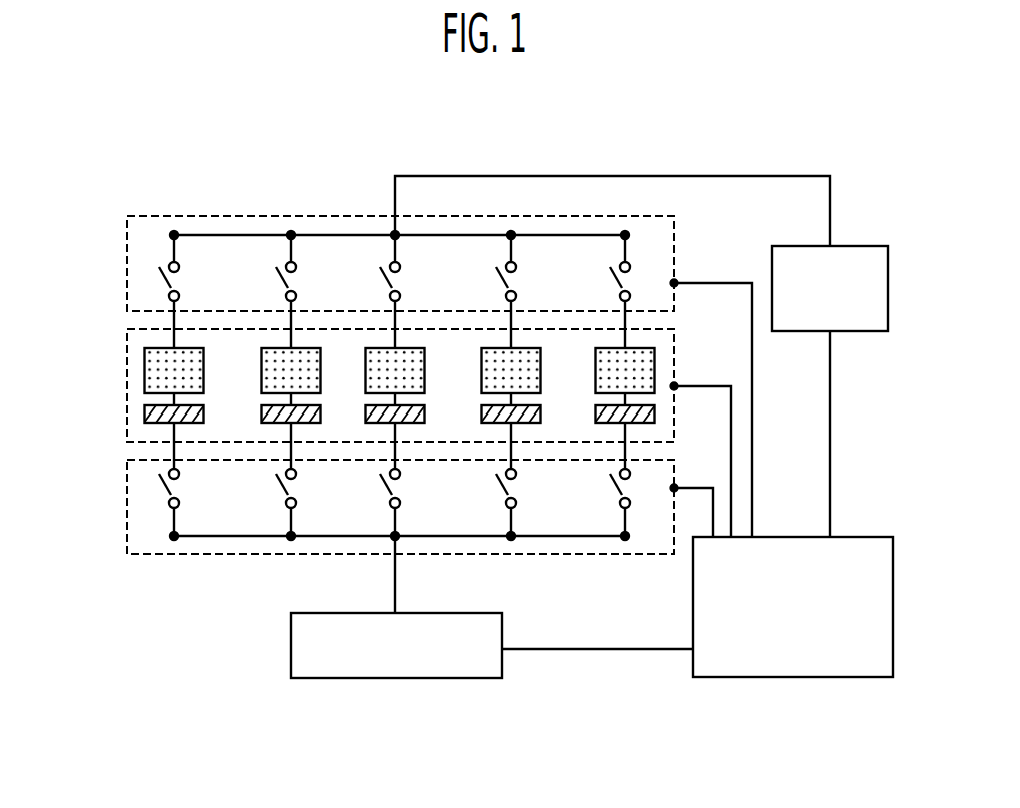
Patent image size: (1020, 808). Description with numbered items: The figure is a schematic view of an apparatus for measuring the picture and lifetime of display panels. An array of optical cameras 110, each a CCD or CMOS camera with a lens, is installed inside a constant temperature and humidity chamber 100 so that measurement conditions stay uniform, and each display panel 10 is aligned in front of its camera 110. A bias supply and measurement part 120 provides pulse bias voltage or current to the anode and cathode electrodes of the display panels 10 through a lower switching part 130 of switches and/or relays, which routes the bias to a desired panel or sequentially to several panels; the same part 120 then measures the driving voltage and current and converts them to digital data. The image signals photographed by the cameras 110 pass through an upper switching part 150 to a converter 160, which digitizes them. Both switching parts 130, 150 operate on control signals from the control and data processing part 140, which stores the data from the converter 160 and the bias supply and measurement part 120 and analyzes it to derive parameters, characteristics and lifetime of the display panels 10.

The display panel 10 is at (144, 410).
The constant temperature and humidity chamber 100 is at (127, 342).
The optical camera 110 is at (144, 375).
The bias supply and measurement part 120 is at (291, 640).
The switching part 130 is at (127, 505).
The control and data processing part 140 is at (693, 598).
The switching part 150 is at (145, 216).
The converter 160 is at (848, 246).